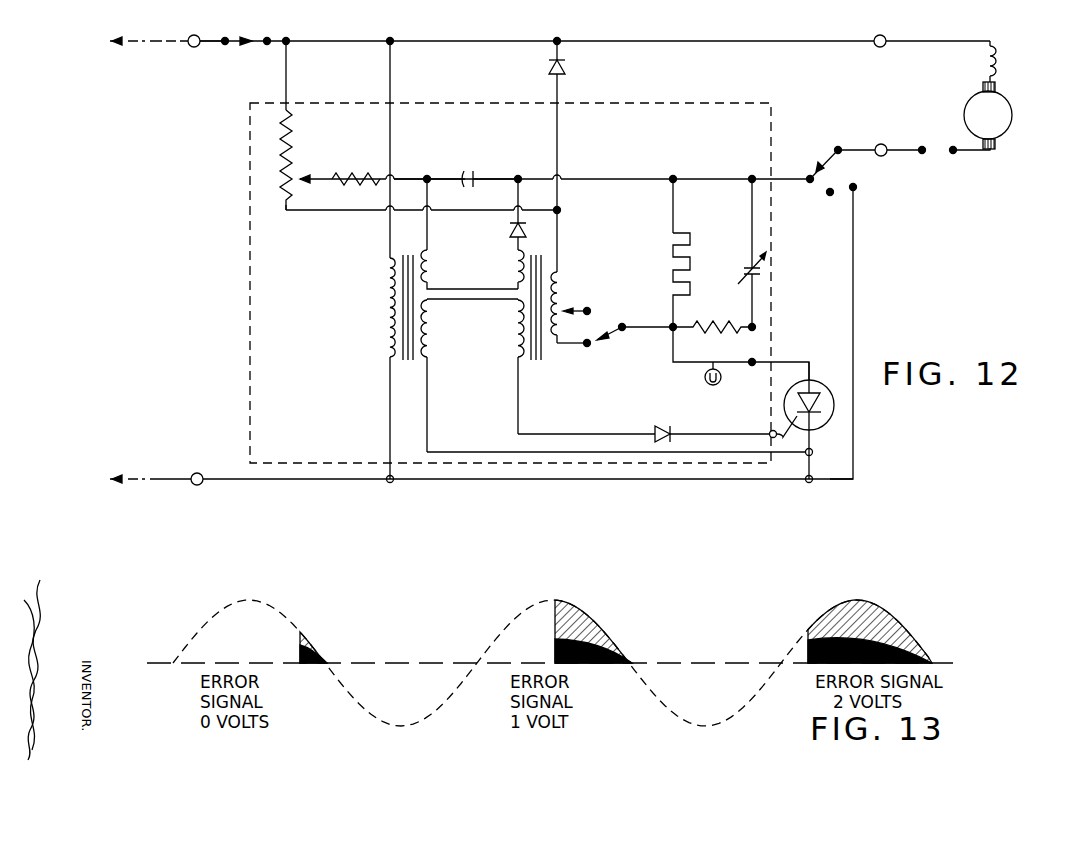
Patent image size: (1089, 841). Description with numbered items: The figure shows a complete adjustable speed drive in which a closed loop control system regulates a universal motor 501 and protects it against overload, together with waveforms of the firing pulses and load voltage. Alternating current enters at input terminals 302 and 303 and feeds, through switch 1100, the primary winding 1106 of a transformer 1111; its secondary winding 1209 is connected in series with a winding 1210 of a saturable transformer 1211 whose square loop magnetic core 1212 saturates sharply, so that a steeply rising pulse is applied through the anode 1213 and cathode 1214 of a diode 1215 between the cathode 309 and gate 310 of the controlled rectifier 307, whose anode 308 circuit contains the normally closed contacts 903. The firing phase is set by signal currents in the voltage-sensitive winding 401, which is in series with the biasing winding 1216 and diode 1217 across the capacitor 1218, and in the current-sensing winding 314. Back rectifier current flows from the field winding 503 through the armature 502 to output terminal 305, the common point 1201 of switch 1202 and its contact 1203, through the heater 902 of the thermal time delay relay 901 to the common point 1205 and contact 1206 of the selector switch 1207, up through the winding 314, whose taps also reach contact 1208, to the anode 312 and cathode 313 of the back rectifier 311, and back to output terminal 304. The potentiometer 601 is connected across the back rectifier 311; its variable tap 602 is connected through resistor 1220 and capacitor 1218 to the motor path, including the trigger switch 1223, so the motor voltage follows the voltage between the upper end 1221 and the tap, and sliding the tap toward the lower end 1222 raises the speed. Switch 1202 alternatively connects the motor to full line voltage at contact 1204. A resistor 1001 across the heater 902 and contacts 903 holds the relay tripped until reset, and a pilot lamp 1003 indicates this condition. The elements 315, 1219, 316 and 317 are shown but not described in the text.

The input terminal 302 is at (190, 47).
The switch 1100 is at (232, 44).
The input terminal 303 is at (191, 474).
The output terminal 304 is at (877, 47).
The output terminal 305 is at (878, 144).
The common point 1201 is at (836, 148).
The contact 1203 is at (808, 186).
The contact 1205 is at (828, 198).
The contact 1204 is at (858, 190).
The switch 1202 is at (858, 200).
The trigger switch 1223 is at (930, 163).
The field winding 503 is at (996, 60).
The motor 501 is at (1060, 92).
The armature 502 is at (1006, 128).
The upper end of potentiometer 1221 is at (290, 112).
The speed-controlling potentiometer 601 is at (291, 156).
The variable tap 602 is at (304, 176).
The resistor 1220 is at (365, 176).
The lower end of potentiometer 1222 is at (286, 212).
The capacitor circuit 315 is at (495, 134).
The capacitor 1218 is at (476, 172).
The back rectifier 311 is at (546, 62).
The cathode 313 is at (565, 60).
The anode 312 is at (562, 72).
The junction 1219 is at (561, 210).
The diode 1217 is at (526, 230).
The alternating current biasing winding 1216 is at (430, 256).
The voltage-sensitive winding 401 is at (512, 262).
The secondary winding 1209 is at (432, 345).
The winding 1210 is at (513, 354).
The saturable transformer 1211 is at (507, 330).
The magnetic core 1212 is at (542, 362).
The transformer 1111 is at (380, 300).
The primary winding 1106 is at (386, 352).
The winding 314 is at (562, 290).
The contact 1208 is at (590, 309).
The selector switch 1207 is at (667, 282).
The contact 1206 is at (590, 346).
The pilot lamp 1003 is at (704, 380).
The thermal time delay relay 901 is at (676, 240).
The heater 902 is at (692, 262).
The normally closed contacts 903 is at (748, 278).
The resistor 1001 is at (697, 330).
The controlled rectifier 307 is at (836, 358).
The anode 308 is at (792, 396).
The gate 310 is at (800, 414).
The gate electrode 316 is at (770, 432).
The cathode 309 is at (820, 428).
The conductor 317 is at (794, 456).
The anode 1213 is at (654, 434).
The cathode 1214 is at (672, 432).
The diode 1215 is at (646, 426).